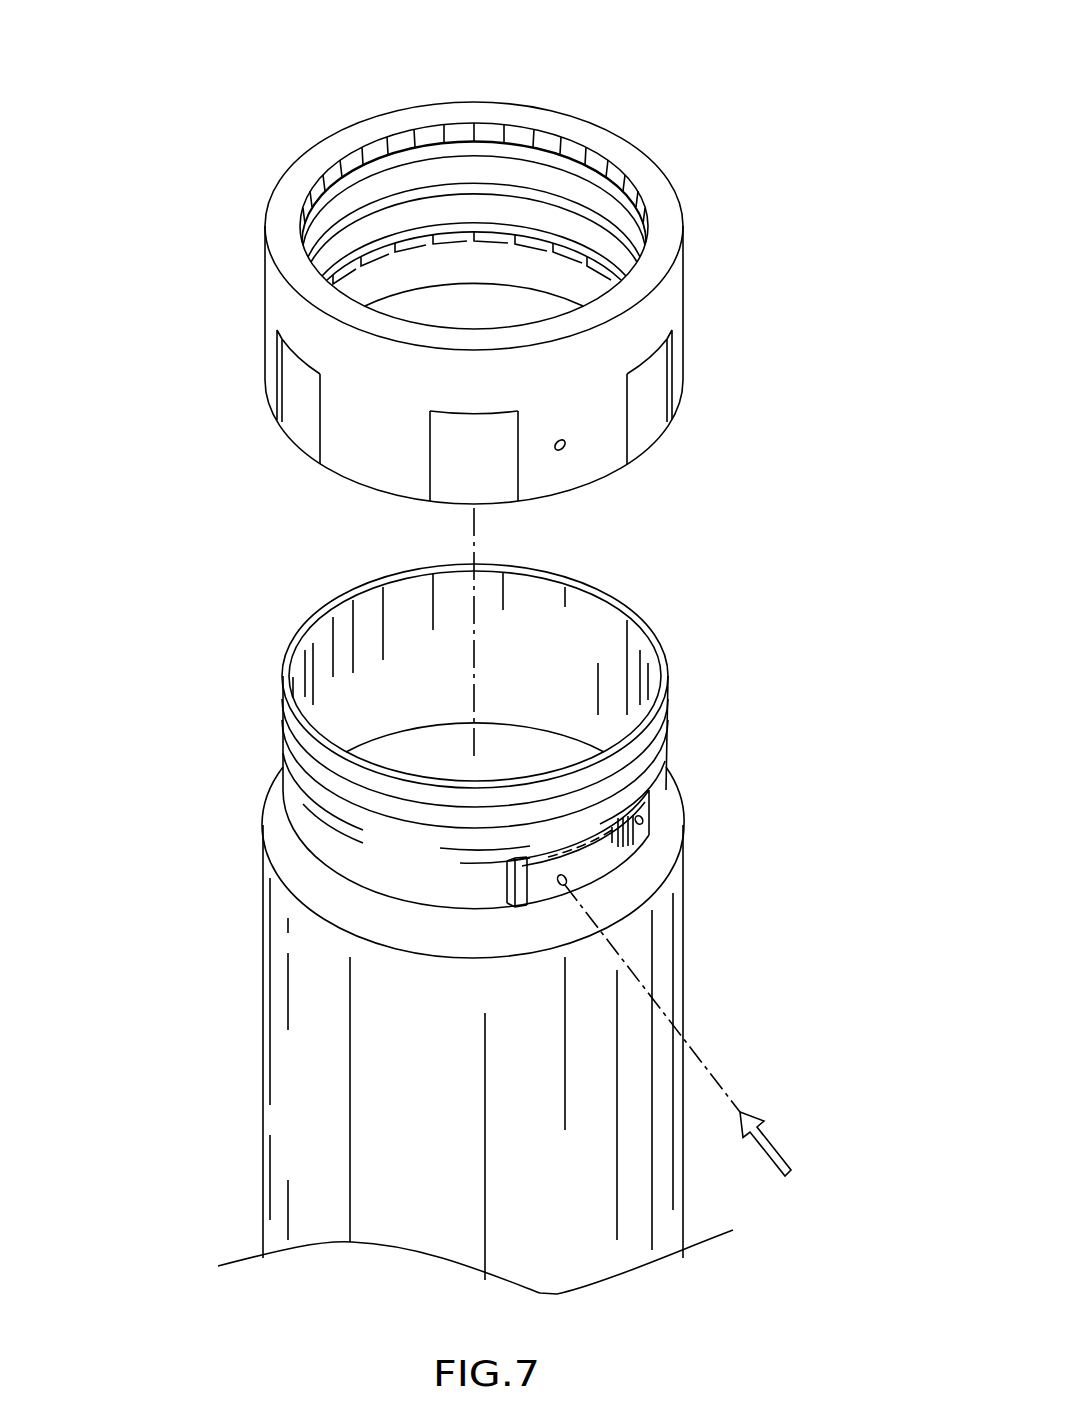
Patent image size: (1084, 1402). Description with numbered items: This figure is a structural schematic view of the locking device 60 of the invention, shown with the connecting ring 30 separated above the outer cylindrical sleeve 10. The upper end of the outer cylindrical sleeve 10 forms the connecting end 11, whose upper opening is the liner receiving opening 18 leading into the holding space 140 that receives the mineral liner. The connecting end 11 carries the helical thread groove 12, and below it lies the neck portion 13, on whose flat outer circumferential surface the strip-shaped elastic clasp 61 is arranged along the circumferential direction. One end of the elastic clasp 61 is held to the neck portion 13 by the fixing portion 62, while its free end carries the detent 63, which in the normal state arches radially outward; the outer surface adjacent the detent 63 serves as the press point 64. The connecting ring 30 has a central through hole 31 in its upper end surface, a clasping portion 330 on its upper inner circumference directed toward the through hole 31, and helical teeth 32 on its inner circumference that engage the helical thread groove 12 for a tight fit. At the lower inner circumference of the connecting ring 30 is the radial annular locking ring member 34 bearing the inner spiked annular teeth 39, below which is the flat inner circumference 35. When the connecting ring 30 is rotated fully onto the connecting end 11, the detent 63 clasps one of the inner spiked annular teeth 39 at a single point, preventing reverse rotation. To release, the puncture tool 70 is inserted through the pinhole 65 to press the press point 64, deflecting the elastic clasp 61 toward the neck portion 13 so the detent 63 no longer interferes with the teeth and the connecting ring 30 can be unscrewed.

The outer cylindrical sleeve 10 is at (483, 901).
The connecting end 11 is at (533, 716).
The helical thread groove 12 is at (660, 770).
The neck portion 13 is at (653, 790).
The liner receiving opening 18 is at (345, 604).
The holding space 140 is at (365, 705).
The connecting ring 30 is at (432, 289).
The through hole 31 is at (554, 130).
The helical teeth 32 is at (513, 153).
The clasping portion 330 is at (480, 148).
The locking ring member 34 is at (510, 218).
The flat inner circumference 35 is at (490, 270).
The inner spiked annular teeth 39 is at (523, 263).
The pinhole 65 is at (562, 452).
The locking device 60 is at (650, 922).
The elastic clasp 61 is at (590, 862).
The fixing portion 62 is at (643, 826).
The detent 63 is at (503, 905).
The press point 64 is at (552, 902).
The puncture tool 70 is at (772, 1150).